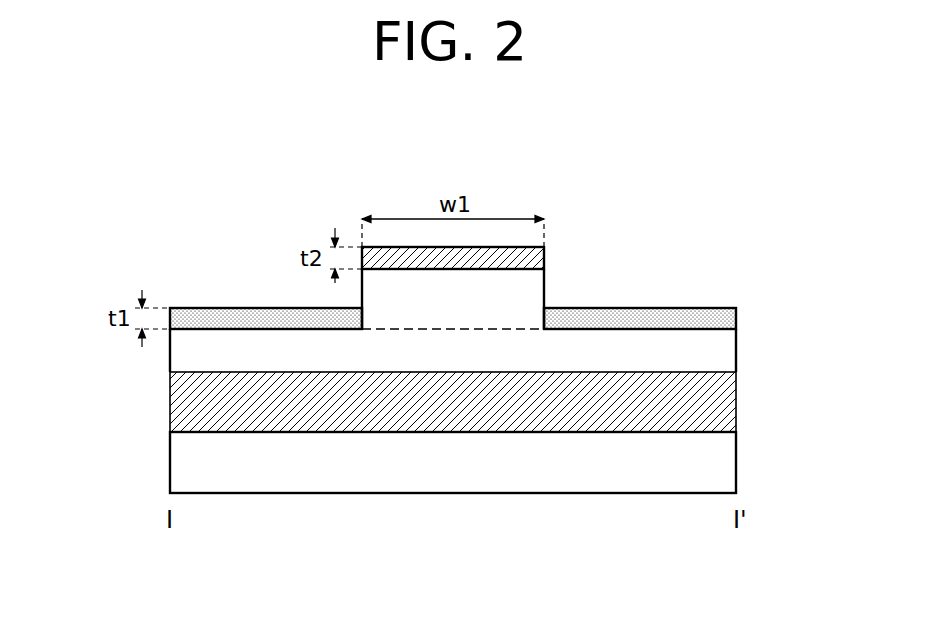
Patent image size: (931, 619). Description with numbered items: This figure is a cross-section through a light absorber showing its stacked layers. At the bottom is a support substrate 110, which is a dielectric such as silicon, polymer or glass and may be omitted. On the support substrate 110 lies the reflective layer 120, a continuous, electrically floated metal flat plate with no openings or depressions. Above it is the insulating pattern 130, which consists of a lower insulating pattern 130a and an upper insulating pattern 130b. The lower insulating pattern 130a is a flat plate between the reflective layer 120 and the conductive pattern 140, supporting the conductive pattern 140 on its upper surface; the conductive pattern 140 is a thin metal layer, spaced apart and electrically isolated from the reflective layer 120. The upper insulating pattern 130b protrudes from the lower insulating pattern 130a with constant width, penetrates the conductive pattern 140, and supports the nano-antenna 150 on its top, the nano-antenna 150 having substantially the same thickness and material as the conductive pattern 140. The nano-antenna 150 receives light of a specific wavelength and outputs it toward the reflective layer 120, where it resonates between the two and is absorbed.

The support substrate 110 is at (727, 463).
The reflective layer 120 is at (727, 403).
The insulating pattern 130 is at (453, 438).
The lower insulating pattern 130a is at (398, 354).
The upper insulating pattern 130b is at (490, 305).
The conductive pattern 140 is at (735, 314).
The nano-antenna 150 is at (535, 257).